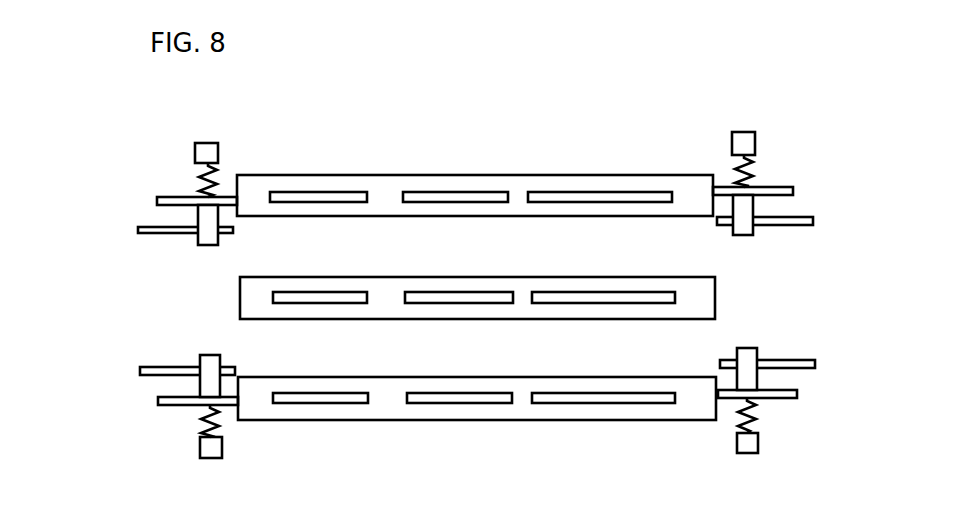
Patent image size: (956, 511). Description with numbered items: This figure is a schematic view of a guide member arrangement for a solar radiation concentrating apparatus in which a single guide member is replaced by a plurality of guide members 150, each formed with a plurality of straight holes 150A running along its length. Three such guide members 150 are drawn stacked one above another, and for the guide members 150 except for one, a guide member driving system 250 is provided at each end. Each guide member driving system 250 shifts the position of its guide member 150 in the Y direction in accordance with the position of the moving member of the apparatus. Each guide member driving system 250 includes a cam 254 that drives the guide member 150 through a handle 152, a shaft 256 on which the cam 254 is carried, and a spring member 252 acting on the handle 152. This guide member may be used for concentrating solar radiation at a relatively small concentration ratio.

The guide member 150 is at (228, 320).
The straight holes 150A is at (240, 295).
The handle 152 is at (147, 198).
The guide member driving system 250 is at (163, 173).
The spring member 252 is at (220, 150).
The cam 254 is at (190, 216).
The shaft 256 is at (138, 235).